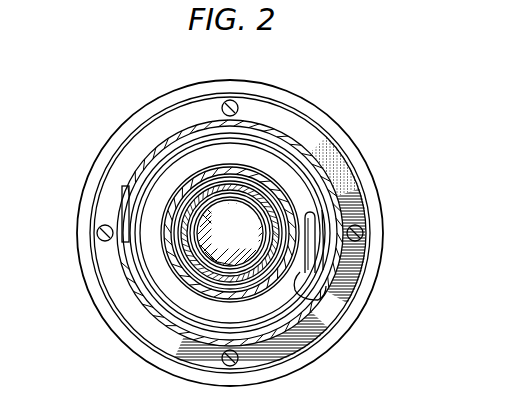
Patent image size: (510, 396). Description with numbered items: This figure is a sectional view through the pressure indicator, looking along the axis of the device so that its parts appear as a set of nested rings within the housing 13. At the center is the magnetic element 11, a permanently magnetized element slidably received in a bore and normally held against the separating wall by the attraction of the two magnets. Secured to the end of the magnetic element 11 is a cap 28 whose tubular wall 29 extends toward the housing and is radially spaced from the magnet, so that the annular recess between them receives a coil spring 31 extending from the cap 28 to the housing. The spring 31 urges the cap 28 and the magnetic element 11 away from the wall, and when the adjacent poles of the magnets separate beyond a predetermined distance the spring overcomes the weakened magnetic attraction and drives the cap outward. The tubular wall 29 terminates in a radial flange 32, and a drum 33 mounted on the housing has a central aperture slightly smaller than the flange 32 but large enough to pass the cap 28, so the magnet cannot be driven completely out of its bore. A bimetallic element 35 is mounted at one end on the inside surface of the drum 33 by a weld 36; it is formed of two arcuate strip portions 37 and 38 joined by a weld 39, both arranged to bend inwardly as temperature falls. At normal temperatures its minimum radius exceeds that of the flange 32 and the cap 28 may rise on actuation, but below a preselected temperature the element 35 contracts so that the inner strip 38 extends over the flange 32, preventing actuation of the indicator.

The housing 13 is at (100, 328).
The weld 36 is at (123, 235).
The drum 33 is at (142, 160).
The tubular wall 29 is at (163, 236).
The bimetallic element 35 is at (216, 156).
The arcuate strip portion 37 is at (322, 200).
The weld 39 is at (305, 272).
The arcuate strip portion 38 is at (345, 303).
The radial flange 32 is at (254, 300).
The coil spring 31 is at (253, 195).
The cap 28 is at (226, 262).
The magnetic element 11 is at (229, 246).